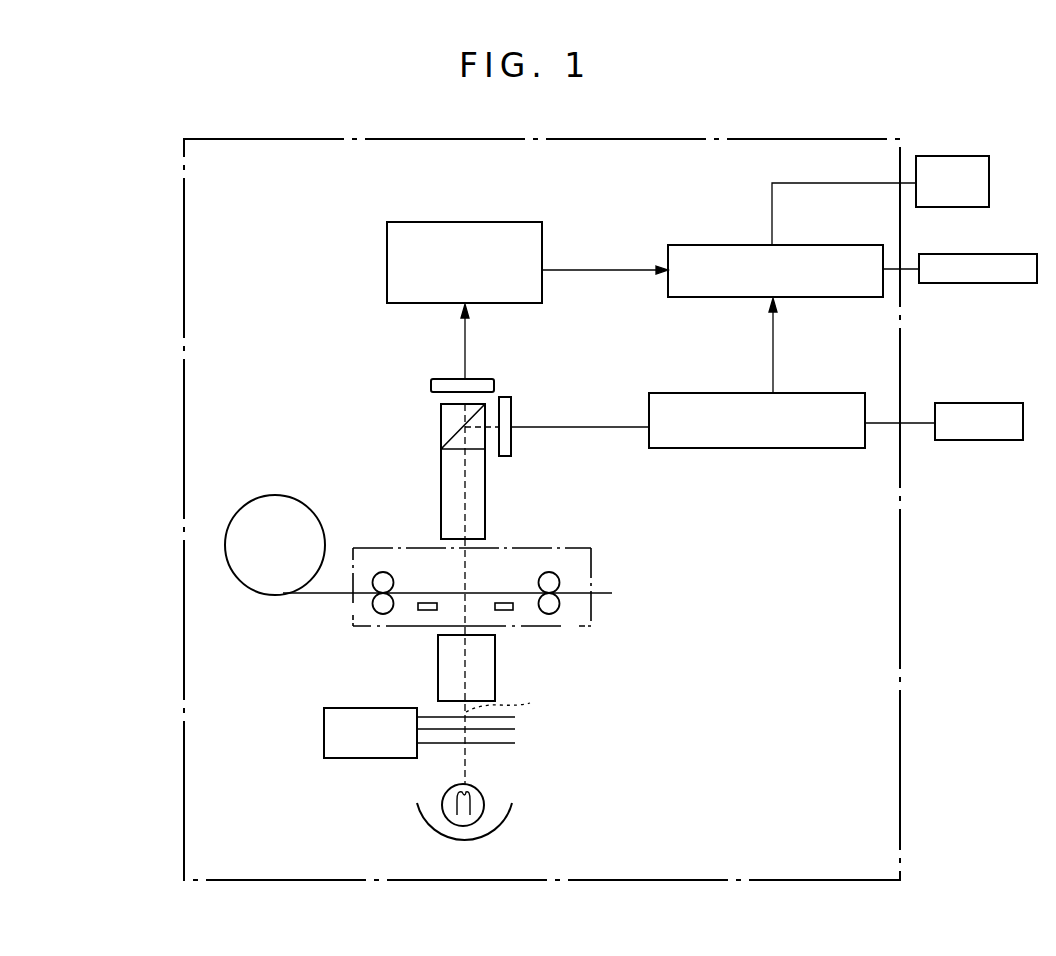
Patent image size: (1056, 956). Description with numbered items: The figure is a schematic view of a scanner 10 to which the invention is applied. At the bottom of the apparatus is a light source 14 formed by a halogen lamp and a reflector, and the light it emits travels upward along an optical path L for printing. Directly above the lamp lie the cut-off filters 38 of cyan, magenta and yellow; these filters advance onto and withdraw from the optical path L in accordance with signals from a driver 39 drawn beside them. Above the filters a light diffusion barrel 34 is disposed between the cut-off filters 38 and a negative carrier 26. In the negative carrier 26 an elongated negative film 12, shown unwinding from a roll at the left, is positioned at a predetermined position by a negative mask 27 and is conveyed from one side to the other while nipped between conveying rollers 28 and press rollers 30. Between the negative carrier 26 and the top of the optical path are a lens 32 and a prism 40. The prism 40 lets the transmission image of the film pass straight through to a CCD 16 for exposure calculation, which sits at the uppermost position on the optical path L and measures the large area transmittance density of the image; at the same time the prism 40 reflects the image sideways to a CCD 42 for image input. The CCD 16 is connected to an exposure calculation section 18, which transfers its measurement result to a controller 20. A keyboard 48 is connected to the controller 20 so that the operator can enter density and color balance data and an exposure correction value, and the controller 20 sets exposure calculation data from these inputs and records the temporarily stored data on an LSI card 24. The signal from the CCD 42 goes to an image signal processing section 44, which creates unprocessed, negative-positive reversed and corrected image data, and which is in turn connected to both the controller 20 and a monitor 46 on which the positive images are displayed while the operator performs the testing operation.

The scanner 10 is at (757, 137).
The negative film 12 is at (312, 597).
The light source 14 is at (528, 795).
The CCD for exposure calculation 16 is at (432, 378).
The exposure calculation section 18 is at (488, 222).
The controller 20 is at (694, 298).
The LSI card 24 is at (945, 156).
The negative carrier 26 is at (593, 618).
The negative mask 27 is at (428, 611).
The conveying rollers 28 is at (372, 615).
The press rollers 30 is at (384, 572).
The lens 32 is at (426, 467).
The light diffusion barrel 34 is at (495, 674).
The cut-off filters 38 is at (534, 735).
The driver 39 is at (367, 758).
The prism 40 is at (441, 420).
The CCD for image input 42 is at (505, 457).
The image signal processing section 44 is at (775, 449).
The monitor 46 is at (964, 441).
The keyboard 48 is at (980, 284).
The optical path L is at (507, 703).